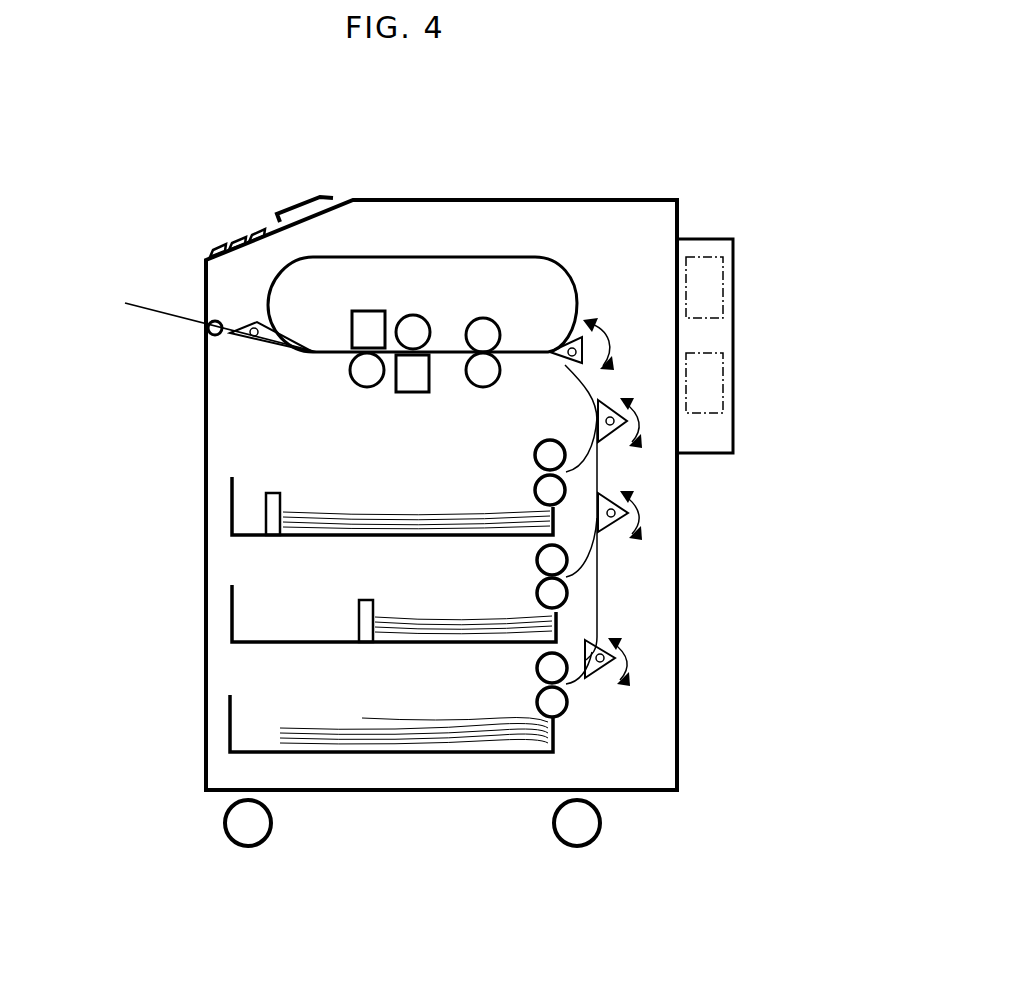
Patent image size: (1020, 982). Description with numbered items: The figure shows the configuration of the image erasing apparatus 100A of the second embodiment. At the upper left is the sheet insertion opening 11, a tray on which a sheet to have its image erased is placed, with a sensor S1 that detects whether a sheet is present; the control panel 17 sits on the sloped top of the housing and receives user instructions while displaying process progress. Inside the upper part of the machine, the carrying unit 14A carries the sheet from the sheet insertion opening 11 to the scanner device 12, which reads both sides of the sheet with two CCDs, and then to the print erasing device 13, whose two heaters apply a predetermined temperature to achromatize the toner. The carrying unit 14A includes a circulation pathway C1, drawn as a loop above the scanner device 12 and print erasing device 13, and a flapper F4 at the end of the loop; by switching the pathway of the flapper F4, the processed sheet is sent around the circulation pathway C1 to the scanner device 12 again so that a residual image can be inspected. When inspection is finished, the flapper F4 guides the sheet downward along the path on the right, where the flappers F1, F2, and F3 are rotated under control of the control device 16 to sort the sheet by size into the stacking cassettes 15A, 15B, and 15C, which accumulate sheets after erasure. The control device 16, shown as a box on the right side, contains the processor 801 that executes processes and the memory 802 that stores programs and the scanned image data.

The image erasing apparatus 100A is at (578, 172).
The control panel 17 is at (262, 222).
The control device 16 is at (720, 239).
The processor 801 is at (723, 280).
The memory 802 is at (723, 373).
The circulation pathway C1 is at (428, 249).
The scanner device 12 is at (374, 402).
The print erasing device 13 is at (468, 396).
The carrying unit 14A is at (580, 370).
The sheet insertion opening 11 is at (160, 318).
The sensor S1 is at (207, 355).
The flapper F4 is at (588, 352).
The flapper F1 is at (612, 392).
The flapper F2 is at (603, 540).
The flapper F3 is at (600, 672).
The stacking cassette 15A is at (228, 505).
The stacking cassette 15B is at (228, 607).
The stacking cassette 15C is at (228, 717).